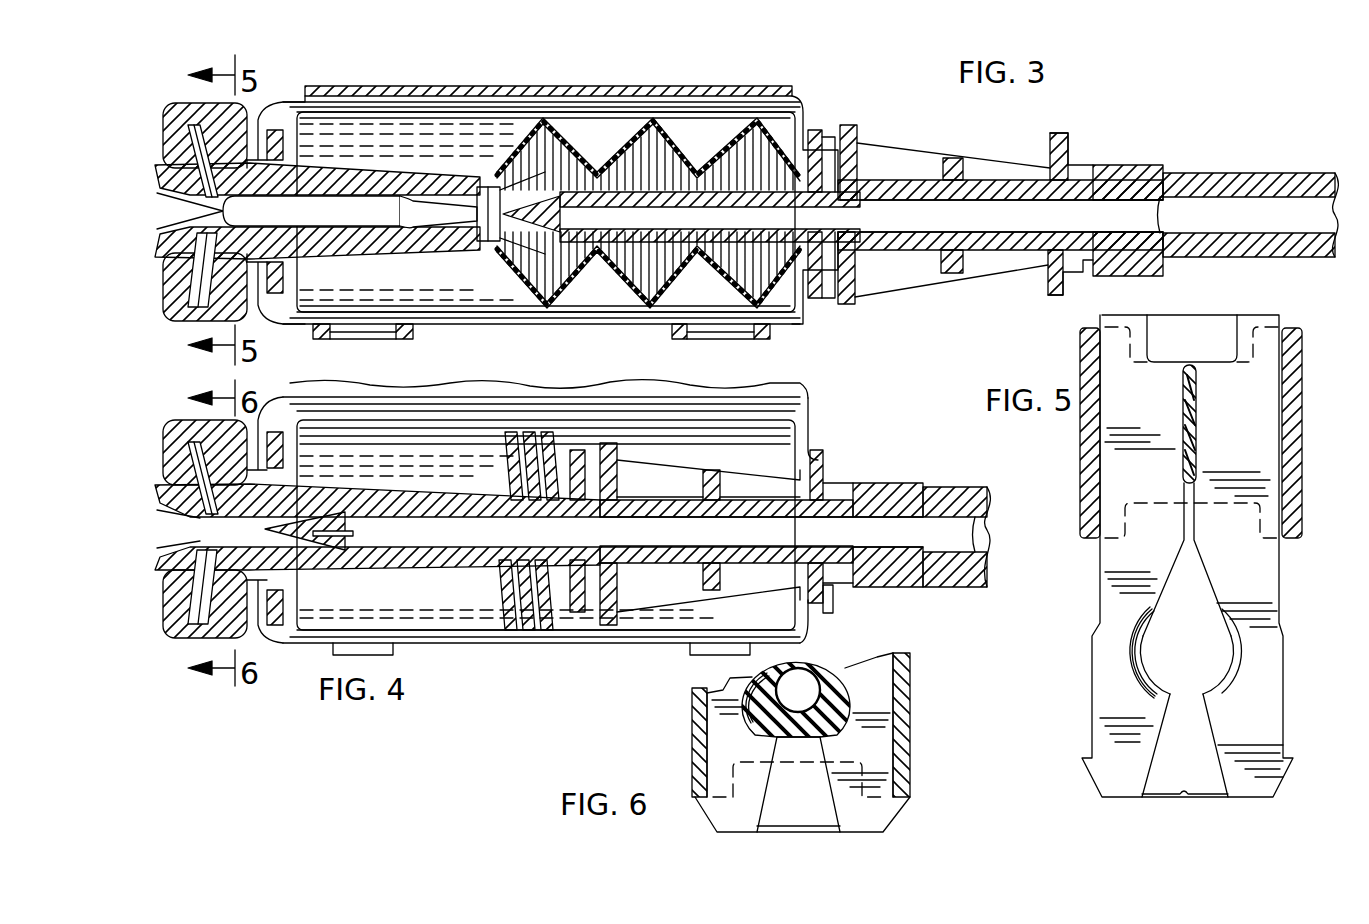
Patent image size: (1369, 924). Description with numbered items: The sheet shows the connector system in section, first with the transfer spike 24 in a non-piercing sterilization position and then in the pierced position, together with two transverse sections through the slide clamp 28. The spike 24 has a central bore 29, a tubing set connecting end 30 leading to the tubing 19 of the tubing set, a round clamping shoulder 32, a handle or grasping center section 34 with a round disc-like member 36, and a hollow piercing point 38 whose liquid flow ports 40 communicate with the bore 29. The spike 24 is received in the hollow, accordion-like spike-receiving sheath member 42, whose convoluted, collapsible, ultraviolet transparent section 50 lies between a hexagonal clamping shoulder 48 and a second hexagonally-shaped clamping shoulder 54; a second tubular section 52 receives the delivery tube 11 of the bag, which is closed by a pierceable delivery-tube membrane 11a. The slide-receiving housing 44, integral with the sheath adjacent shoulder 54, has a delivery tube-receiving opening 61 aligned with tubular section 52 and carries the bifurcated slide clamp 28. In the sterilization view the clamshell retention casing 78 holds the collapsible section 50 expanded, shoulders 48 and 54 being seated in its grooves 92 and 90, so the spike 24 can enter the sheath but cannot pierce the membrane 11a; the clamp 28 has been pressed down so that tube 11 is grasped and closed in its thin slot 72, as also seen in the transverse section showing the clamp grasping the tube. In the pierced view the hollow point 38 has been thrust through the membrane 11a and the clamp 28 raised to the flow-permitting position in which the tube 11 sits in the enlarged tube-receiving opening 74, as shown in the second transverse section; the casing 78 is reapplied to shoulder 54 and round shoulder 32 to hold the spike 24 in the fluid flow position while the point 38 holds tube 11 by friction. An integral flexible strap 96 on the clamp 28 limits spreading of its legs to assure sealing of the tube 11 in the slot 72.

In FIG. 3, the tube 11 is at (340, 187).
In FIG. 4, the tube 11 is at (330, 490).
In FIG. 5, the tube 11 is at (1183, 408).
In FIG. 6, the tube 11 is at (823, 708).
In FIG. 3, the delivery-tube membrane 11a is at (390, 197).
In FIG. 3, the tubing 19 is at (1255, 173).
In FIG. 3, the transfer spike 24 is at (903, 142).
In FIG. 4, the transfer spike 24 is at (644, 583).
In FIG. 3, the slide clamp 28 is at (203, 307).
In FIG. 4, the slide clamp 28 is at (283, 447).
In FIG. 5, the slide clamp 28 is at (1100, 592).
In FIG. 6, the slide clamp 28 is at (723, 728).
In FIG. 3, the central bore 29 is at (667, 212).
In FIG. 4, the central bore 29 is at (760, 530).
In FIG. 3, the tubing set connecting end 30 is at (1130, 165).
In FIG. 3, the round clamping shoulder 32 is at (1066, 133).
In FIG. 4, the round clamping shoulder 32 is at (825, 462).
In FIG. 3, the handle or grasping center section 34 is at (960, 160).
In FIG. 3, the round disc-like member 36 is at (857, 129).
In FIG. 3, the hollow piercing point 38 is at (540, 172).
In FIG. 4, the hollow piercing point 38 is at (265, 528).
In FIG. 3, the liquid flow ports 40 is at (578, 222).
In FIG. 3, the spike-receiving sheath member 42 is at (488, 250).
In FIG. 3, the slide-receiving housing 44 is at (186, 103).
In FIG. 4, the slide-receiving housing 44 is at (245, 630).
In FIG. 5, the slide-receiving housing 44 is at (1290, 403).
In FIG. 6, the slide-receiving housing 44 is at (900, 718).
In FIG. 3, the hexagonal clamping shoulder 48 is at (818, 130).
In FIG. 4, the hexagonal clamping shoulder 48 is at (576, 606).
In FIG. 3, the convoluted collapsible ultraviolet transparent section 50 is at (680, 128).
In FIG. 4, the convoluted collapsible ultraviolet transparent section 50 is at (505, 446).
In FIG. 3, the second tubular section 52 is at (433, 170).
In FIG. 4, the second tubular section 52 is at (386, 492).
In FIG. 3, the second hexagonally-shaped clamping shoulder 54 is at (272, 150).
In FIG. 4, the second hexagonally-shaped clamping shoulder 54 is at (283, 598).
In FIG. 3, the delivery tube-receiving opening 61 is at (240, 273).
In FIG. 4, the delivery tube-receiving opening 61 is at (196, 640).
In FIG. 5, the thin slot 72 is at (1190, 493).
In FIG. 5, the enlarged tube-receiving opening 74 is at (1137, 660).
In FIG. 6, the enlarged tube-receiving opening 74 is at (842, 729).
In FIG. 3, the clamshell retention casing 78 is at (480, 87).
In FIG. 3, the groove 90 is at (283, 284).
In FIG. 4, the groove 90 is at (283, 452).
In FIG. 3, the groove 92 is at (832, 300).
In FIG. 4, the groove 92 is at (835, 612).
In FIG. 6, the integral flexible strap 96 is at (777, 825).